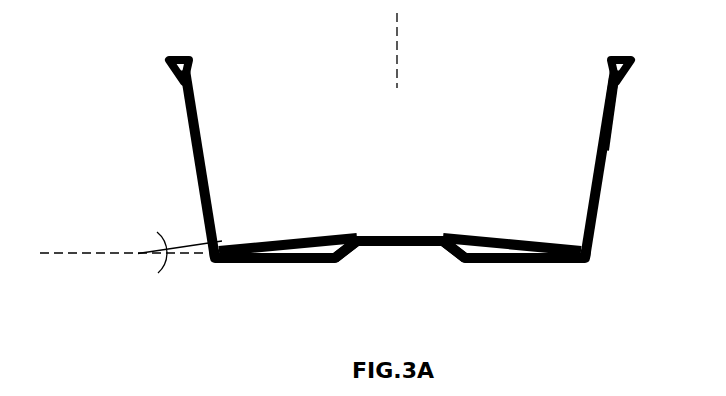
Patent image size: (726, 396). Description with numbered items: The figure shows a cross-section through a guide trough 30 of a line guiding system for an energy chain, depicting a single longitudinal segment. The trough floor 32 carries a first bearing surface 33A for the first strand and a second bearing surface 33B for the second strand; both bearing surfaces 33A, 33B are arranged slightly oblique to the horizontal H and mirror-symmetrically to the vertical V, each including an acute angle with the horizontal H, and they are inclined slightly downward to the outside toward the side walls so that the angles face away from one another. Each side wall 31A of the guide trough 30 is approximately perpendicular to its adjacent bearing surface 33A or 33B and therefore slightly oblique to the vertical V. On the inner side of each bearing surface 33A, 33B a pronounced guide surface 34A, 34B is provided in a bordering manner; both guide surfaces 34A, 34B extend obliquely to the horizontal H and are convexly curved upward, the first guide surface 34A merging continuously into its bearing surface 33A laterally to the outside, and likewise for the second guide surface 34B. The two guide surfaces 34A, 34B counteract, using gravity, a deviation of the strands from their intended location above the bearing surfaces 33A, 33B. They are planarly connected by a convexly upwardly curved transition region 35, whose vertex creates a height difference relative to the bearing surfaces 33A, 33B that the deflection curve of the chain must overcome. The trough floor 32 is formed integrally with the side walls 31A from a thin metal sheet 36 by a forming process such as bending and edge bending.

The guide trough 30 is at (363, 162).
The side wall 31A is at (203, 120).
The trough floor 32 is at (610, 203).
The first bearing surface 33A is at (225, 245).
The second bearing surface 33B is at (455, 230).
The first guide surface 34A is at (357, 218).
The second guide surface 34B is at (446, 219).
The transition region 35 is at (402, 218).
The metal sheet 36 is at (601, 150).
The horizontal H is at (58, 251).
The vertical V is at (402, 52).